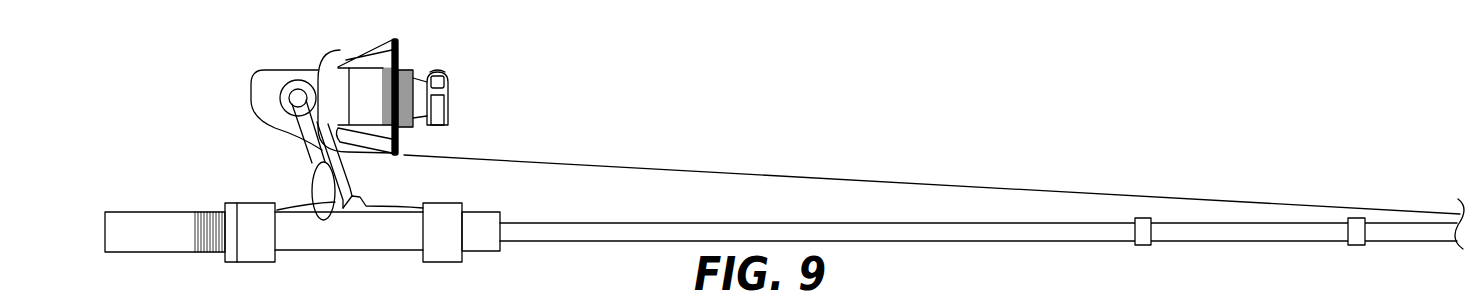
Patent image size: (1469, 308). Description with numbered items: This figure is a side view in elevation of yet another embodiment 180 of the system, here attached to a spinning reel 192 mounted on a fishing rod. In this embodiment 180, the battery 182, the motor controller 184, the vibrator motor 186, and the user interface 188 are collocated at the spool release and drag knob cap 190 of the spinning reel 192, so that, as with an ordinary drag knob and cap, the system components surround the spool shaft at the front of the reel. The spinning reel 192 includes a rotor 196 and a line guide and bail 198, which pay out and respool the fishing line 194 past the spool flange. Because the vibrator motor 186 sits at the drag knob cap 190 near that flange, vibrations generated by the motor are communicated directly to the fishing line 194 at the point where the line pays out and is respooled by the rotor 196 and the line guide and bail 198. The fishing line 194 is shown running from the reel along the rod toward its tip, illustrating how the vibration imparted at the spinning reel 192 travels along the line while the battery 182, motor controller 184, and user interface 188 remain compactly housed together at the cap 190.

The embodiment 180 is at (925, 144).
The battery 182 is at (450, 118).
The motor controller 184 is at (446, 98).
The vibrator motor 186 is at (440, 72).
The user interface 188 is at (437, 72).
The spool release and drag knob cap 190 is at (420, 66).
The spinning reel 192 is at (293, 70).
The fishing line 194 is at (1032, 187).
The rotor 196 is at (348, 47).
The line guide and bail 198 is at (400, 156).